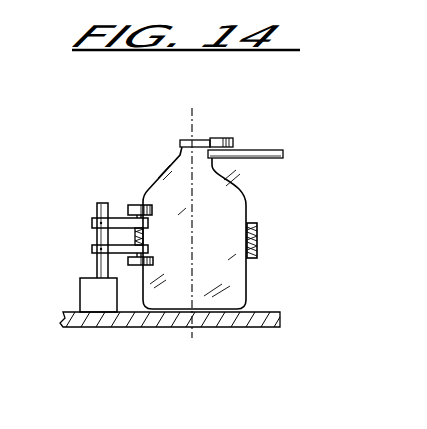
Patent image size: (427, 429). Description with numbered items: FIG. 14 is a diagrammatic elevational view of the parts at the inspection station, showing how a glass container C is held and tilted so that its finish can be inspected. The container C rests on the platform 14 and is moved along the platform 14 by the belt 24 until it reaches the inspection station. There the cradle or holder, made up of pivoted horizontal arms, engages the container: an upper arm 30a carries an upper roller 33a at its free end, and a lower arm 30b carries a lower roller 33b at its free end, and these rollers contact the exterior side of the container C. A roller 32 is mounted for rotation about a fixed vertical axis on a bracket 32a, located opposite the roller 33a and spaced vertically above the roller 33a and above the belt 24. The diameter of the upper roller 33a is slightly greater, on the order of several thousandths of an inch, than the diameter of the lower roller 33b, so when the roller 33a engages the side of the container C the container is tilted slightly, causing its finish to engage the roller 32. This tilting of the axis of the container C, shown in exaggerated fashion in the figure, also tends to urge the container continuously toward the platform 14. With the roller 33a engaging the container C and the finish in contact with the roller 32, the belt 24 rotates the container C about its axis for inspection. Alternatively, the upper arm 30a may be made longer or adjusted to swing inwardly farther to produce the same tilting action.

The platform 14 is at (258, 326).
The container C is at (250, 270).
The belt 24 is at (257, 232).
The upper arm 30a is at (100, 221).
The lower arm 30b is at (97, 250).
The roller 32 is at (233, 140).
The bracket 32a is at (283, 151).
The upper roller 33a is at (137, 205).
The lower roller 33b is at (130, 260).